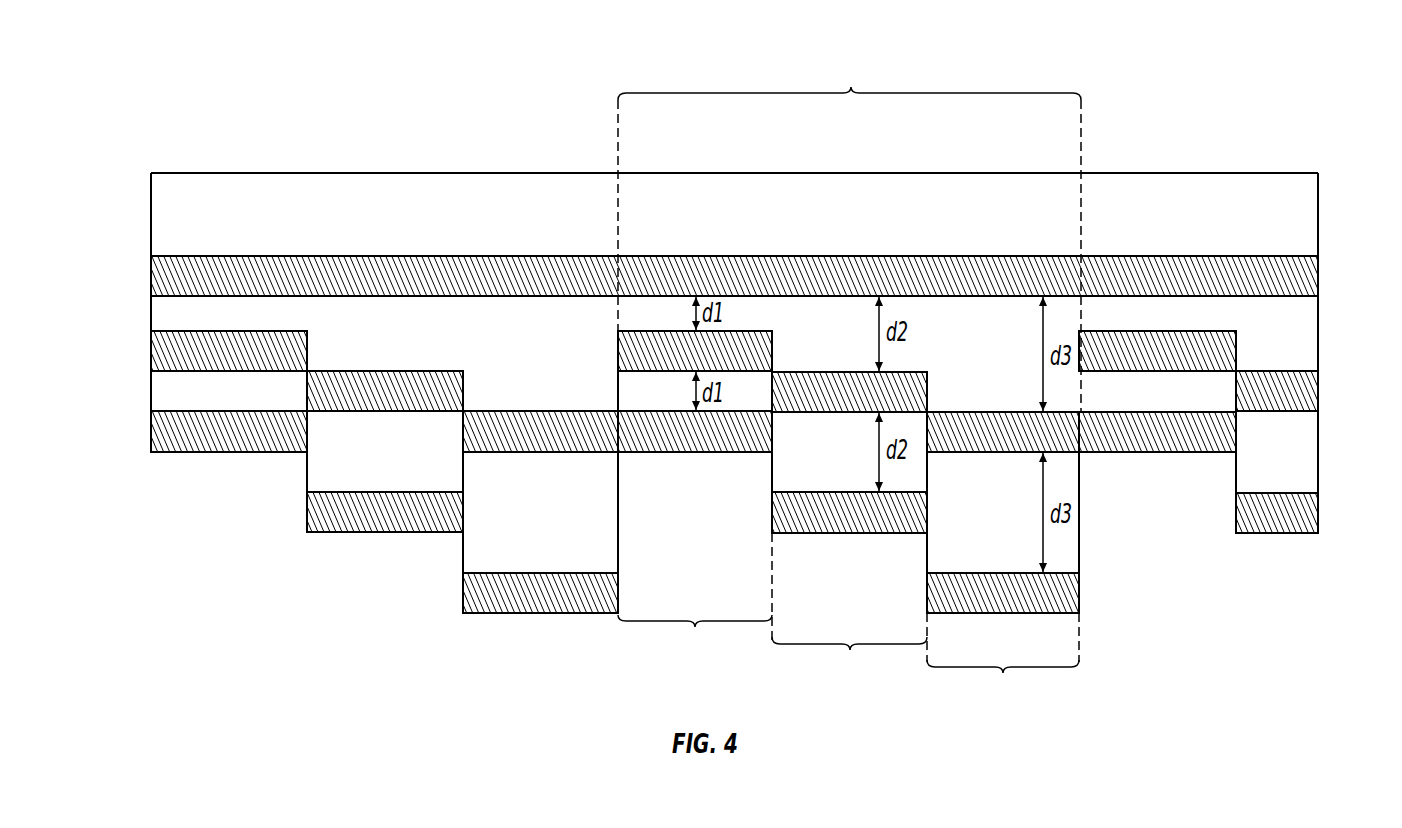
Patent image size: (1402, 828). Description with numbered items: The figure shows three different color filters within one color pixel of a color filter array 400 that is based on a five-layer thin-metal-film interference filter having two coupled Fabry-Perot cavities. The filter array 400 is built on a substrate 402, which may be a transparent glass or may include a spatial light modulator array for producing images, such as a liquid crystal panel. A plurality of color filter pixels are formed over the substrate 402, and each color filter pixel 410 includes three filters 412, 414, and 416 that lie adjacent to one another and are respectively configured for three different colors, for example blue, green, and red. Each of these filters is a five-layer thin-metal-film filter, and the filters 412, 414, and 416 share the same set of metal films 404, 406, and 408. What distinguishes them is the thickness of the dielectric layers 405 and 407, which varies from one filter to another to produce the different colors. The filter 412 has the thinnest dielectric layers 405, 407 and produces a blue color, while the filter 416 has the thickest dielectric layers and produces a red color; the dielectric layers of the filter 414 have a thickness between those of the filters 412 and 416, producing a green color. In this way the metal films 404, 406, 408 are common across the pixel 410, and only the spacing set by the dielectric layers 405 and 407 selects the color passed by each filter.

The color filter array 400 is at (258, 75).
The substrate 402 is at (1320, 190).
The metal film 404 is at (1320, 262).
The dielectric layer 405 is at (150, 304).
The metal film 406 is at (777, 337).
The dielectric layer 407 is at (150, 380).
The metal film 408 is at (633, 454).
The color filter pixel 410 is at (849, 234).
The filter 412 is at (695, 654).
The filter 414 is at (849, 624).
The filter 416 is at (1003, 675).